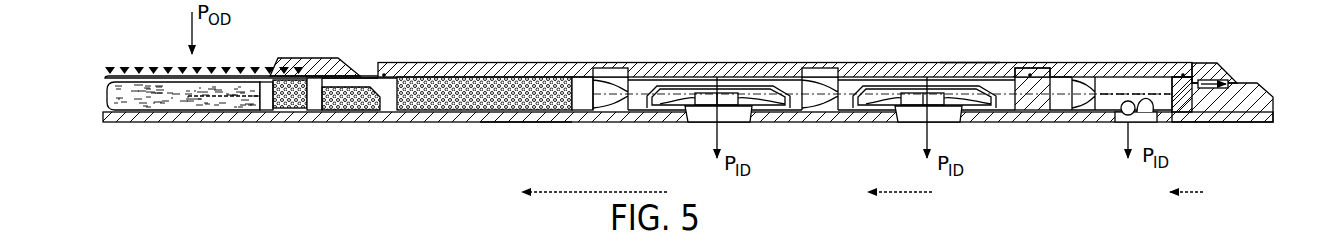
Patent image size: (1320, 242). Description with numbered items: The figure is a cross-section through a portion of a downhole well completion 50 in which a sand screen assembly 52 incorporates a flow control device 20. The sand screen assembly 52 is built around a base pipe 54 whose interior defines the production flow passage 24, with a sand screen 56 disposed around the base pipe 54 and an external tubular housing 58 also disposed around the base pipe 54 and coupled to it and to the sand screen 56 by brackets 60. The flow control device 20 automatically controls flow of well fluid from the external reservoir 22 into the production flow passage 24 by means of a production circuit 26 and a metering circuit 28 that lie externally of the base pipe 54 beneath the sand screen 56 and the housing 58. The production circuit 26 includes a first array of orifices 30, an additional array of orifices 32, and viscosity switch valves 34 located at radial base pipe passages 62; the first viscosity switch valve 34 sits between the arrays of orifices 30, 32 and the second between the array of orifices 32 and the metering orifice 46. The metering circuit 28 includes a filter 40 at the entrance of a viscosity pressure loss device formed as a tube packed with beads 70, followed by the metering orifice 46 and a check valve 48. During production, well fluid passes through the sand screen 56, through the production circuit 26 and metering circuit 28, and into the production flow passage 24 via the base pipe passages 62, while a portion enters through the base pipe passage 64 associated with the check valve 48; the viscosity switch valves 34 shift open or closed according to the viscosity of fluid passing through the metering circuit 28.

The flow control device 20 is at (205, 122).
The reservoir 22 is at (167, 31).
The interior production flow passage 24 is at (1013, 160).
The production circuit 26 is at (582, 100).
The metering circuit 28 is at (531, 123).
The array of orifices 30 is at (610, 70).
The array of orifices 32 is at (820, 70).
The viscosity switch valve 34 is at (705, 82).
The filter 40 is at (138, 110).
The metering orifice 46 is at (1095, 80).
The check valve 48 is at (1150, 112).
The downhole well completion 50 is at (1255, 60).
The sand screen assembly 52 is at (955, 50).
The base pipe 54 is at (383, 115).
The sand screen 56 is at (213, 64).
The external tubular housing 58 is at (545, 63).
The bracket 60 is at (360, 76).
The radial base pipe passage 62 is at (743, 120).
The base pipe passage 64 is at (1122, 120).
The beads 70 is at (505, 95).